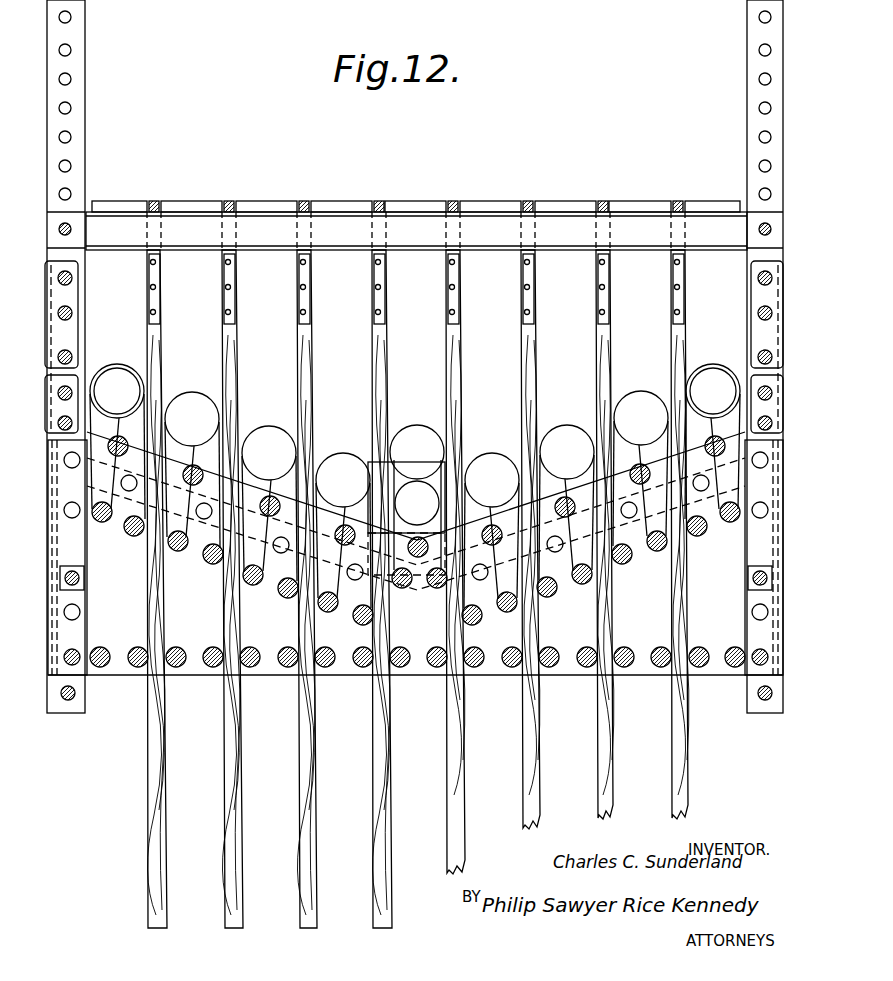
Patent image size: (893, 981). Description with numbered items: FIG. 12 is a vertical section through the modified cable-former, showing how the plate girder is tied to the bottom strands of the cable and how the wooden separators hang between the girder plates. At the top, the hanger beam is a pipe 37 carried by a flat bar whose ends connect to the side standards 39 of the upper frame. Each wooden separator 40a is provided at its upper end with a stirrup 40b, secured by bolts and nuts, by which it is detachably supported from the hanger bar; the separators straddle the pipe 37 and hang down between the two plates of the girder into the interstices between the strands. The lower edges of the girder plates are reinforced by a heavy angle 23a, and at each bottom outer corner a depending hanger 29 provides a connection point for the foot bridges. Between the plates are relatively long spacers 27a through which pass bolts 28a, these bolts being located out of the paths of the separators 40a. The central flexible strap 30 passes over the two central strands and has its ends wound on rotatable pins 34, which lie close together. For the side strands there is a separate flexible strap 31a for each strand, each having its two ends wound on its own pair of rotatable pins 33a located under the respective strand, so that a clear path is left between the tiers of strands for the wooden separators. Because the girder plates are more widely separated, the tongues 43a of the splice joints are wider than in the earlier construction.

The reinforcing angle 23a is at (436, 667).
The spacer 27a is at (130, 445).
The bolt 28a is at (205, 466).
The depending hanger 29 is at (68, 707).
The central flexible strap 30 is at (418, 426).
The flexible strap 31a is at (113, 364).
The pair of rotatable pins 33a is at (134, 536).
The rotatable pin 34 is at (437, 588).
The pipe 37 is at (292, 232).
The side standard 39 is at (66, 92).
The wooden separator 40a is at (302, 748).
The stirrup 40b is at (378, 201).
The tongue of splice joint 43a is at (58, 297).